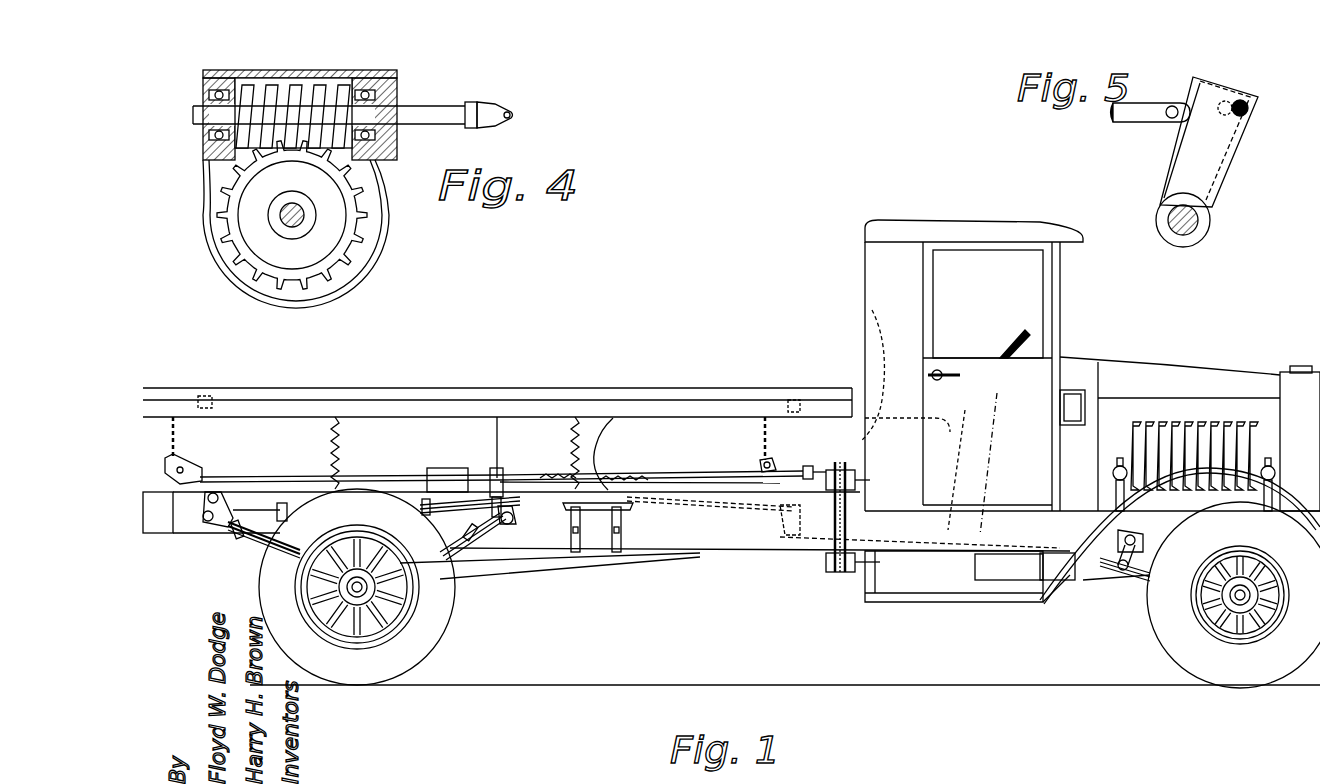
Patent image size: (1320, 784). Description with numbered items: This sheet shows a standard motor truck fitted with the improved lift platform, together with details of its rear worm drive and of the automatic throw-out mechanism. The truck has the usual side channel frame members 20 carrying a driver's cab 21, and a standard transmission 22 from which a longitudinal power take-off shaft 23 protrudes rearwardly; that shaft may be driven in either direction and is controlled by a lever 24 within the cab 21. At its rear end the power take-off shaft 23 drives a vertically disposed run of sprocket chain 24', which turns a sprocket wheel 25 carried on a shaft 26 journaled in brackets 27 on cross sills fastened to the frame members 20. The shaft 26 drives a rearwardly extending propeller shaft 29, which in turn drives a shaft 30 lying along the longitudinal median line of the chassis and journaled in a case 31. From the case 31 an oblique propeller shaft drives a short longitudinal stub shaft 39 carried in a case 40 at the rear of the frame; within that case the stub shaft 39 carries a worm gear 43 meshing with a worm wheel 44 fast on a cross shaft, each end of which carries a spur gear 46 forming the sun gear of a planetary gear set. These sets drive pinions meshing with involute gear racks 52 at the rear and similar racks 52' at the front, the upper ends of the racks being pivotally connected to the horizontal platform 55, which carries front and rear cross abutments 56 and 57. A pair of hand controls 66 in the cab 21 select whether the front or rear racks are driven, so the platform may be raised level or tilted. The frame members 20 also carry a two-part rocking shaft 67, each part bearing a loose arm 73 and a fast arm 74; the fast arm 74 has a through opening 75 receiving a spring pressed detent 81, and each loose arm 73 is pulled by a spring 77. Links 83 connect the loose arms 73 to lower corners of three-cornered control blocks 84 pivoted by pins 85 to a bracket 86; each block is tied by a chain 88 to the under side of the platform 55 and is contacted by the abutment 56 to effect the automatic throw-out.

In FIG. 1, the side channel frame members 20 is at (741, 507).
In FIG. 1, the driver's cab 21 is at (978, 226).
In FIG. 1, the transmission 22 is at (1062, 567).
In FIG. 1, the power take-off shaft 23 is at (905, 560).
In FIG. 1, the lever 24 is at (1020, 435).
In FIG. 1, the sprocket chain 24' is at (820, 605).
In FIG. 1, the sprocket wheel 25 is at (840, 462).
In FIG. 1, the shaft 26 is at (837, 470).
In FIG. 1, the brackets 27 is at (823, 497).
In FIG. 1, the propeller shaft 29 is at (703, 474).
In FIG. 1, the shaft 30 is at (497, 417).
In FIG. 1, the case 31 is at (446, 468).
In FIG. 4, the stub shaft 39 is at (437, 110).
In FIG. 4, the case 40 is at (353, 77).
In FIG. 4, the worm gear 43 is at (308, 98).
In FIG. 4, the worm wheel 44 is at (352, 255).
In FIG. 4, the spur gear 46 is at (308, 218).
In FIG. 1, the gear rack 52 is at (355, 453).
In FIG. 1, the involute racks 52' is at (574, 453).
In FIG. 1, the horizontal platform 55 is at (527, 388).
In FIG. 1, the cross abutment 56 is at (212, 407).
In FIG. 1, the cross abutment 57 is at (790, 400).
In FIG. 1, the hand controls 66 is at (967, 403).
In FIG. 5, the two-part shaft 67 is at (1198, 224).
In FIG. 5, the loose arm 73 is at (1200, 80).
In FIG. 5, the fast arm 74 is at (1195, 160).
In FIG. 5, the through opening 75 is at (1248, 104).
In FIG. 1, the spring 77 is at (497, 468).
In FIG. 5, the spring pressed detent 81 is at (1247, 112).
In FIG. 5, the links 83 is at (1135, 118).
In FIG. 1, the links 83 is at (605, 480).
In FIG. 1, the three-cornered control blocks 84 is at (200, 470).
In FIG. 1, the pins 85 is at (202, 472).
In FIG. 1, the bracket 86 is at (197, 490).
In FIG. 1, the chain 88 is at (178, 425).